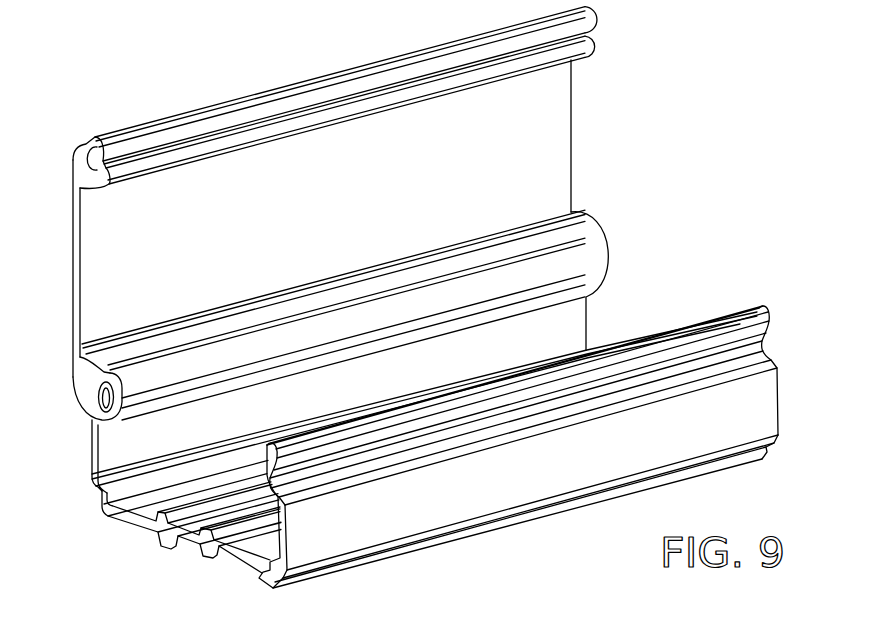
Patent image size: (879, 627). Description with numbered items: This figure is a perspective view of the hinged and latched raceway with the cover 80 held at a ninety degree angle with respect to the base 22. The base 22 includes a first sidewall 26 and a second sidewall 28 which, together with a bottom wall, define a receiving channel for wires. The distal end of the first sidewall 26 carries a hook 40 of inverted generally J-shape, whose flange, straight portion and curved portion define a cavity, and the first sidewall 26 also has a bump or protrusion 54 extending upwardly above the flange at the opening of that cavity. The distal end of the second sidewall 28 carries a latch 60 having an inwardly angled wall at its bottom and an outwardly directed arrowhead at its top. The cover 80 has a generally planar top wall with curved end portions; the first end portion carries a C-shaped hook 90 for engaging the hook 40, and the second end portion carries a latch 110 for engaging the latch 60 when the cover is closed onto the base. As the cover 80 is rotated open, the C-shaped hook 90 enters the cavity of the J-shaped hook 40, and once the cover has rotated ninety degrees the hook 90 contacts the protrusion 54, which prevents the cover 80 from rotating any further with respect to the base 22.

The latch 110 is at (121, 150).
The cover 80 is at (73, 268).
The hook 90 is at (75, 378).
The latch 60 is at (760, 323).
The protrusion 54 is at (97, 416).
The hook 40 is at (98, 429).
The first sidewall 26 is at (92, 462).
The base 22 is at (125, 525).
The second sidewall 28 is at (407, 505).